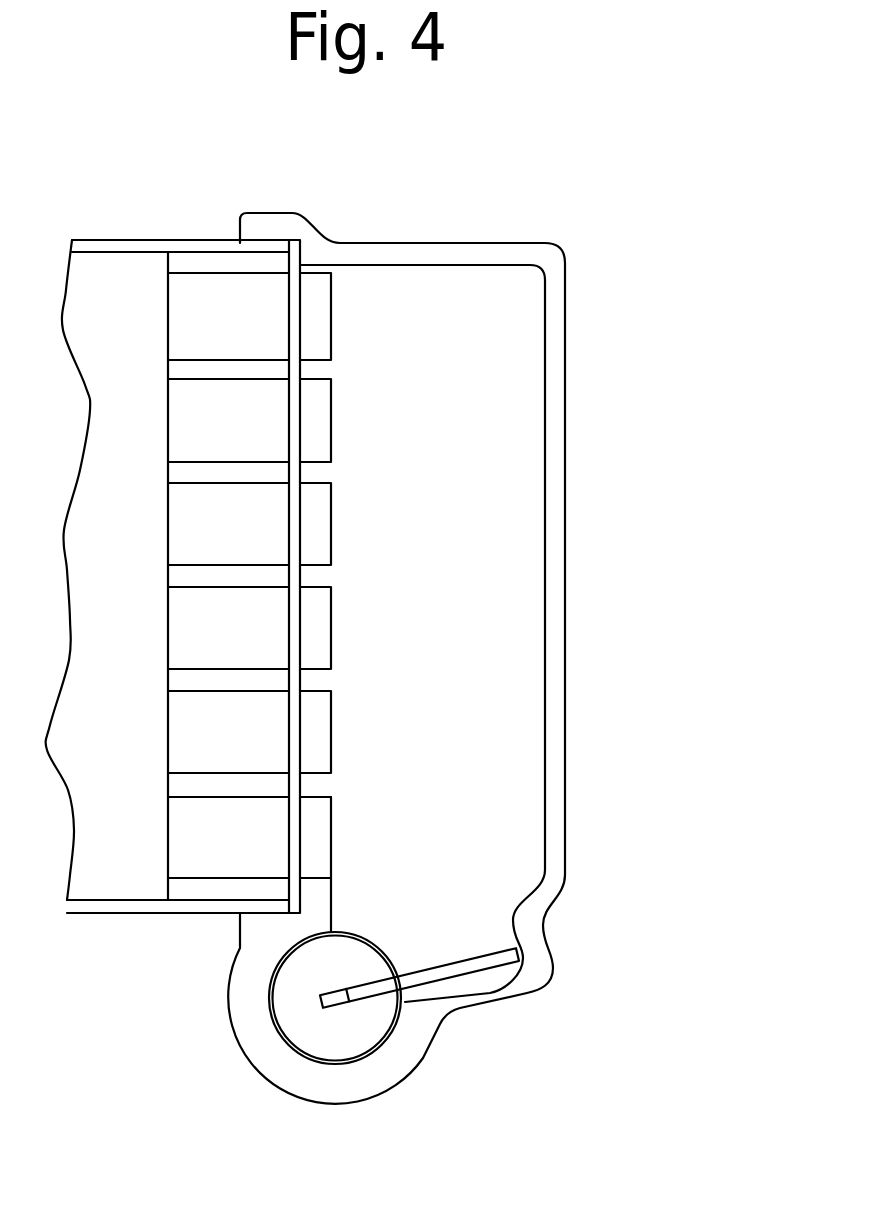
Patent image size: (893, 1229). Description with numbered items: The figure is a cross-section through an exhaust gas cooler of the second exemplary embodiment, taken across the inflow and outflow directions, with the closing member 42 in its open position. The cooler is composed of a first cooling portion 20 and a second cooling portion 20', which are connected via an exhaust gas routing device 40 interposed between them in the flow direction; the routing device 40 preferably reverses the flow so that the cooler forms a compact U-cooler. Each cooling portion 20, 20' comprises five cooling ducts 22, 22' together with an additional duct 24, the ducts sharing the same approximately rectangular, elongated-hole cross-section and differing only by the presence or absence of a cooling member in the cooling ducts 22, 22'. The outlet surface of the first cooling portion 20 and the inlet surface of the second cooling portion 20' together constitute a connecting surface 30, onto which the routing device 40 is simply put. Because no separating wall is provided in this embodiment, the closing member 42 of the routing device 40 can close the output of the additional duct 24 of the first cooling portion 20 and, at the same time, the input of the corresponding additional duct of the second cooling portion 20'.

The first cooling portion 20 is at (173, 526).
The second cooling portion 20' is at (228, 576).
The cooling duct 22 is at (519, 523).
The cooling duct 22' is at (519, 591).
The additional duct 24 is at (488, 837).
The connecting surface 30 is at (333, 325).
The exhaust gas routing device 40 is at (562, 258).
The closing member 42 is at (475, 963).